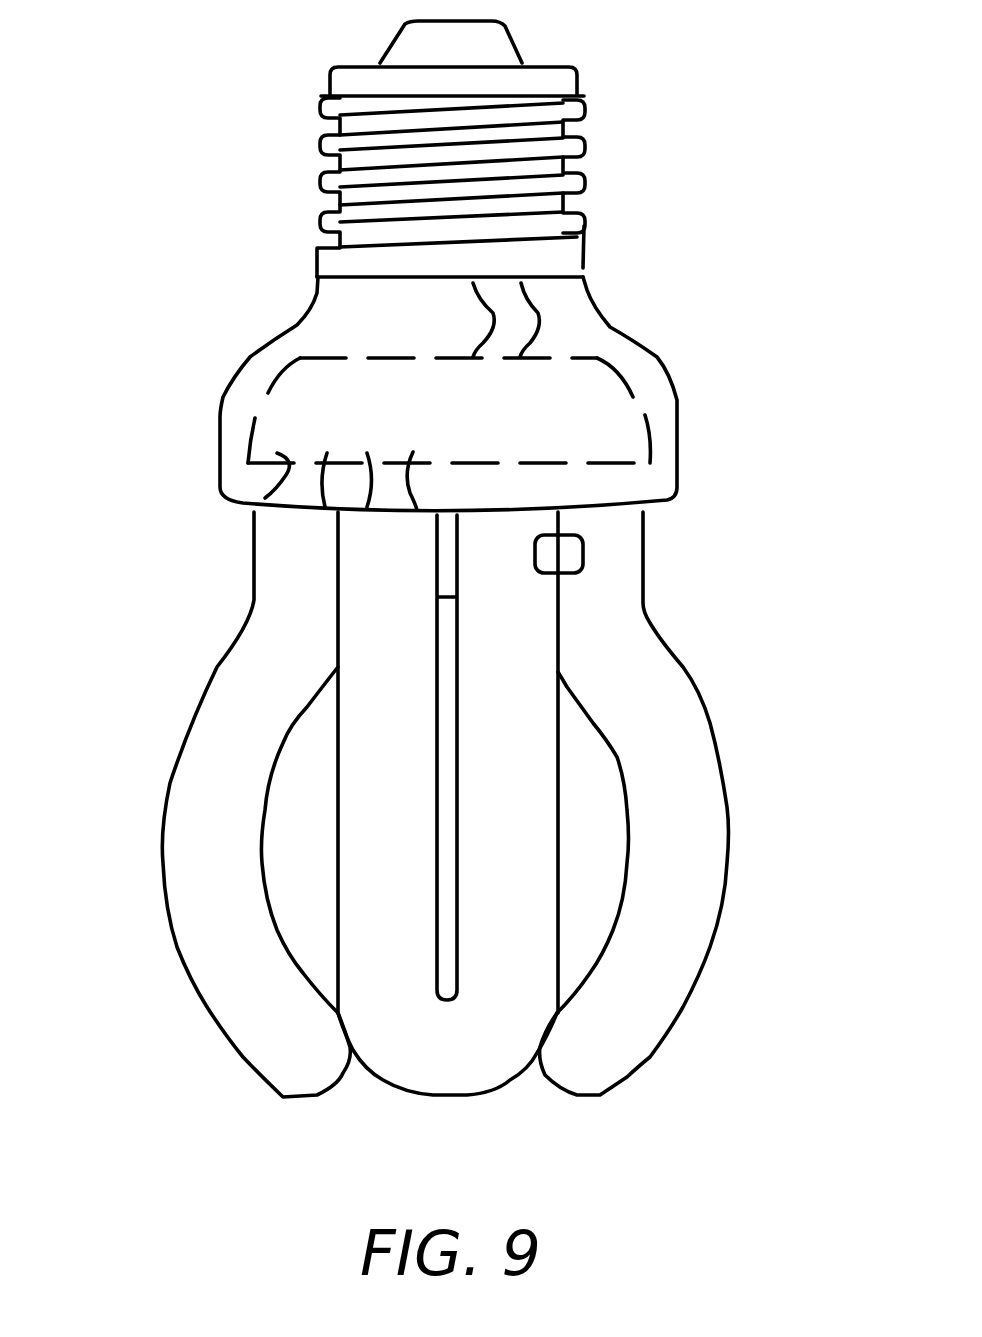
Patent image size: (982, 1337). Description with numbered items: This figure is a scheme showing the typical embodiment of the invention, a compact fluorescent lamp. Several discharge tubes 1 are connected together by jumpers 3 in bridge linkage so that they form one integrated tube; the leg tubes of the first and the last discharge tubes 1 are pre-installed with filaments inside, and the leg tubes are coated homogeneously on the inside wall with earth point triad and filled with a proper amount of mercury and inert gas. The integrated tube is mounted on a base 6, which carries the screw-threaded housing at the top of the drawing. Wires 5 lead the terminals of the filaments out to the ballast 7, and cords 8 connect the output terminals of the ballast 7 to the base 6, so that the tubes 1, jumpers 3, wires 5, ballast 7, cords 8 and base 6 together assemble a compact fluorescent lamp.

The discharge tube 1 is at (738, 743).
The jumper 3 is at (568, 548).
The wire 5 is at (262, 500).
The base 6 is at (233, 367).
The ballast 7 is at (350, 355).
The cord 8 is at (537, 322).